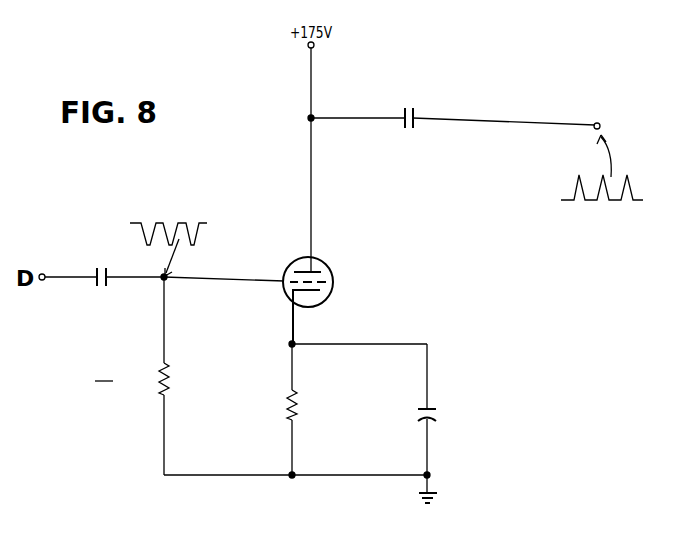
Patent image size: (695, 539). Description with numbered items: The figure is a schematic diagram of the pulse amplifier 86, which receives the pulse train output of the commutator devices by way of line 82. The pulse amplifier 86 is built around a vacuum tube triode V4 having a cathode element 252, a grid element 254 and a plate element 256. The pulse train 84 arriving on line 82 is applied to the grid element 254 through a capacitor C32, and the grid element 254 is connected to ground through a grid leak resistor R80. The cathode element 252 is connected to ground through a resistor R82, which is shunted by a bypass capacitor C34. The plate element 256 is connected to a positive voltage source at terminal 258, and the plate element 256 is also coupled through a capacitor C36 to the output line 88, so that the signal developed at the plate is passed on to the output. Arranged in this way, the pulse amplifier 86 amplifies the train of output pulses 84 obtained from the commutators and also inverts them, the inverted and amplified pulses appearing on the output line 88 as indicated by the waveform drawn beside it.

The terminal 258 is at (315, 46).
The capacitor C36 is at (415, 108).
The output line 88 is at (524, 122).
The pulse train 84 is at (628, 183).
The line 82 is at (92, 270).
The capacitor C32 is at (106, 288).
The grid leak resistor R80 is at (168, 386).
The pulse amplifier 86 is at (104, 372).
The vacuum tube triode V4 is at (329, 293).
The plate element 256 is at (313, 270).
The grid element 254 is at (320, 282).
The cathode element 252 is at (341, 298).
The resistor R82 is at (298, 400).
The bypass capacitor C34 is at (440, 409).